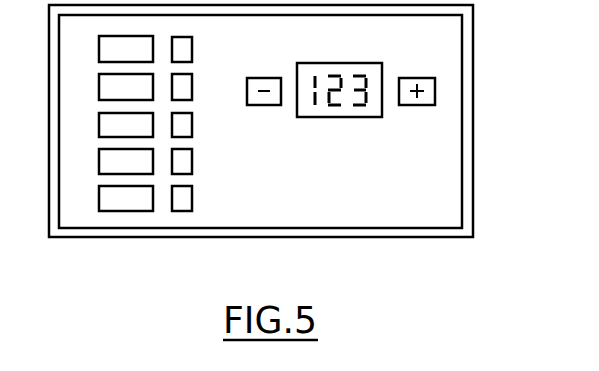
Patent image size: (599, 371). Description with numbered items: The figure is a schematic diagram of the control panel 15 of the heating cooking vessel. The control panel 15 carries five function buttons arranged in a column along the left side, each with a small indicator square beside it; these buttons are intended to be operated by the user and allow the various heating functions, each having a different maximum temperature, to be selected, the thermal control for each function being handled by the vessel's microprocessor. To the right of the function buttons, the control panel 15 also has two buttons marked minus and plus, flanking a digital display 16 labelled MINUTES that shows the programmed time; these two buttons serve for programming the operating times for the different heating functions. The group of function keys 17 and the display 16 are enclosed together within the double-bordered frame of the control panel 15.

The control panel 15 is at (286, 121).
The minutes display 16 is at (383, 66).
The function keys 17 is at (194, 205).